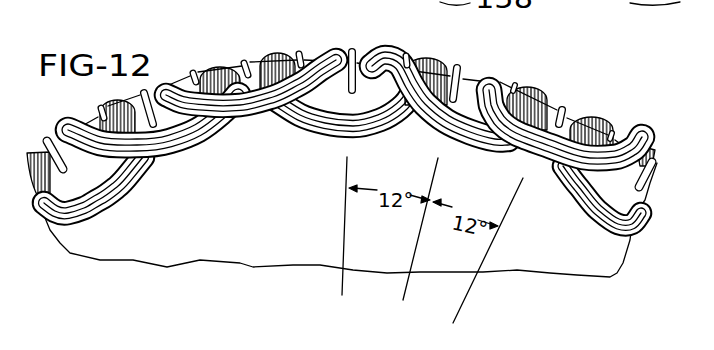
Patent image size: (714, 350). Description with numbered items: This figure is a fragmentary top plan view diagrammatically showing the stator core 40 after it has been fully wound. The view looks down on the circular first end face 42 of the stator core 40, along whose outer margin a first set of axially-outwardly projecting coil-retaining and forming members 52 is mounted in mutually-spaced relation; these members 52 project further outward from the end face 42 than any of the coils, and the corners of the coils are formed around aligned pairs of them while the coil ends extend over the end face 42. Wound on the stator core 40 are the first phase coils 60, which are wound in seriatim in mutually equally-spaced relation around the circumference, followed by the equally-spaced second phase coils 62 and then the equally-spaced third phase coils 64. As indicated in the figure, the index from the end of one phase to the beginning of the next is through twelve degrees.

The stator core 40 is at (259, 266).
The first end face 42 is at (289, 231).
The coil-retaining and forming member 52 is at (352, 48).
The first phase coil 60 is at (105, 207).
The second phase coil 62 is at (193, 150).
The third phase coil 64 is at (260, 117).